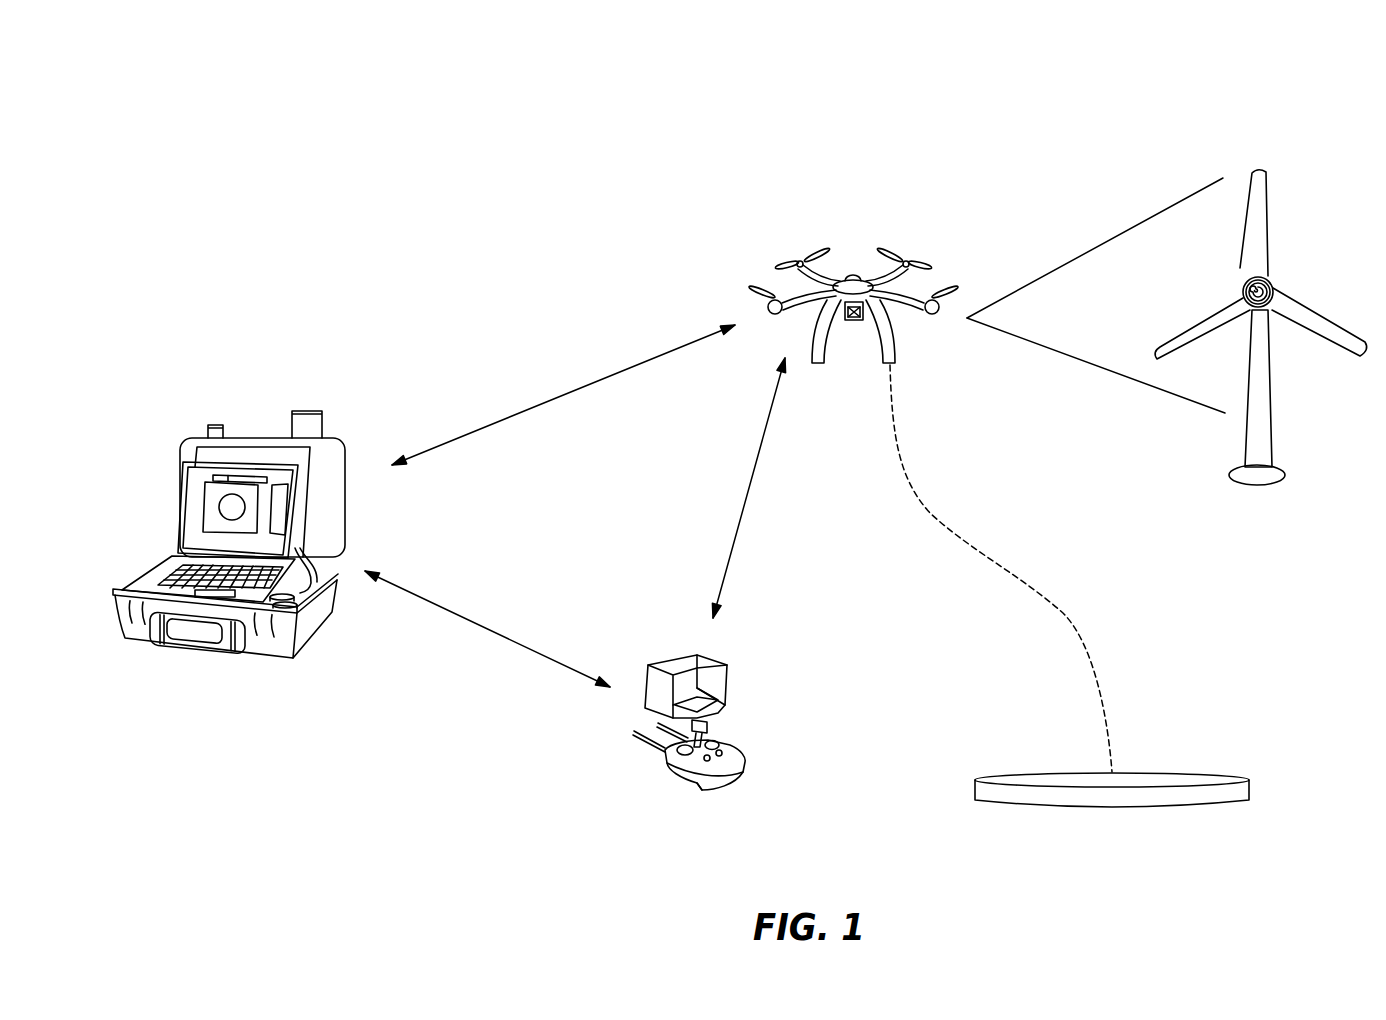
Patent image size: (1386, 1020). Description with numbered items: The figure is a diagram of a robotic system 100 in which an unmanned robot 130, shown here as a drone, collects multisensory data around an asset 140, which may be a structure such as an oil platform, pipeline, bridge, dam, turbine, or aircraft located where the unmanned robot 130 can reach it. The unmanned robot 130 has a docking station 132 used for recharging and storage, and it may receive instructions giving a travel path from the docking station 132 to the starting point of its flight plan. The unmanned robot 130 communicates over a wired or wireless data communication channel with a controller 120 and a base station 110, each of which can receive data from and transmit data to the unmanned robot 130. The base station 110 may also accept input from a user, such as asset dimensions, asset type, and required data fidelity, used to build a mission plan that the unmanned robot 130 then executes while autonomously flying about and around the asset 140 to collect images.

The robotic system 100 is at (1217, 112).
The base station 110 is at (252, 430).
The controller 120 is at (662, 660).
The unmanned robot 130 is at (855, 273).
The docking station 132 is at (1192, 773).
The asset 140 is at (1272, 387).